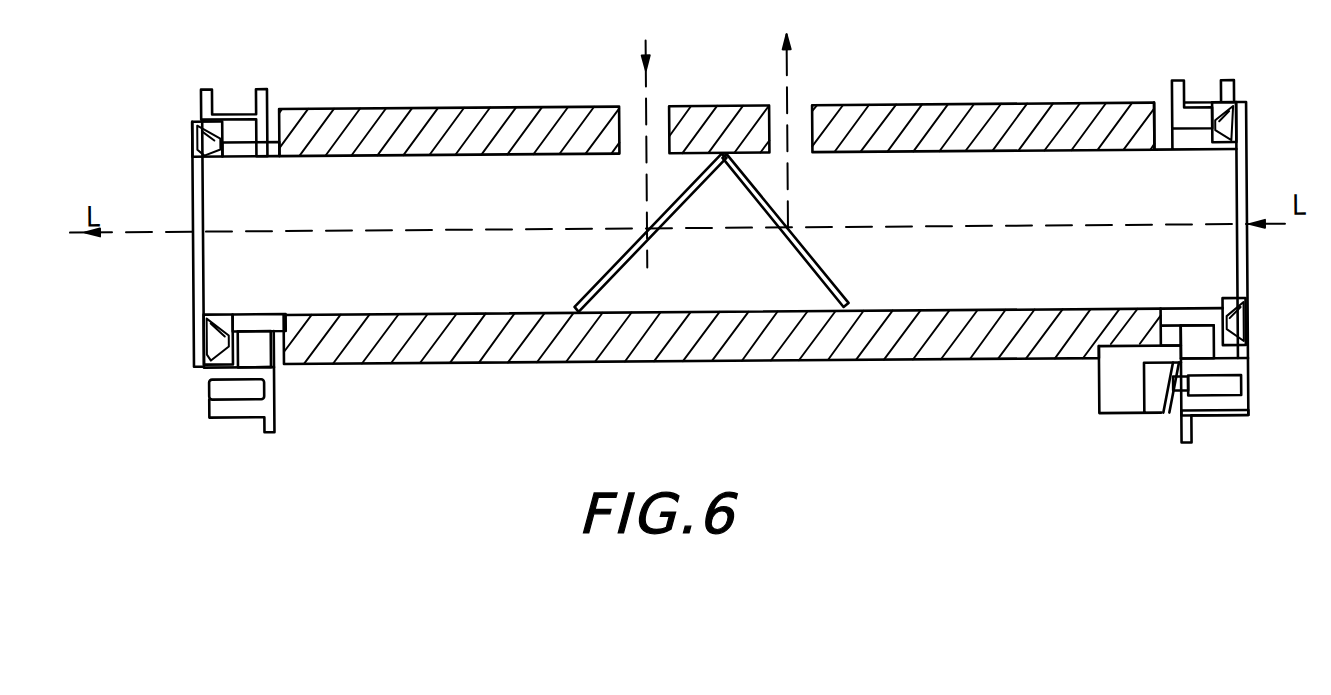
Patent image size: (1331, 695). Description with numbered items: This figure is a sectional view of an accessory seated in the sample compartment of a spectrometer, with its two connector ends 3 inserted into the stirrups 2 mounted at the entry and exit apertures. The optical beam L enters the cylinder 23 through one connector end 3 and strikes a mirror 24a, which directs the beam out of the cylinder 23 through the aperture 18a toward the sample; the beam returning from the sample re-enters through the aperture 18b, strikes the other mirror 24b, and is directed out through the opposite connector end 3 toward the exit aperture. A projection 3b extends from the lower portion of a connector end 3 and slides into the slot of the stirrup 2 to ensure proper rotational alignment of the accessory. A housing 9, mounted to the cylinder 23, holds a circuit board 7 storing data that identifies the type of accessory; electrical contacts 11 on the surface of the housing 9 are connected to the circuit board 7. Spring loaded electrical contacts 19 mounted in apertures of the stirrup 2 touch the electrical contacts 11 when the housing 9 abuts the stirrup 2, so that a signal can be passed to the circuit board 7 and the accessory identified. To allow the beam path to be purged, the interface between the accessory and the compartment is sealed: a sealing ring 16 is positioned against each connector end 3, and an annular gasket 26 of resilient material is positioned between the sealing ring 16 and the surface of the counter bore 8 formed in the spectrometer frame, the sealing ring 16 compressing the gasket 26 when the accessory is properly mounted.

The stirrup 2 is at (245, 126).
The connector end 3 is at (270, 142).
The projection 3b is at (253, 348).
The circuit board 7 is at (1148, 417).
The counter bore 8 is at (195, 198).
The housing 9 is at (1113, 387).
The electrical contacts 11 is at (1162, 404).
The sealing ring 16 is at (202, 143).
The aperture 18a is at (800, 108).
The aperture 18b is at (633, 108).
The spring loaded electrical contacts 19 is at (1247, 421).
The cylinder 23 is at (400, 117).
The mirror 24a is at (790, 242).
The mirror 24b is at (640, 247).
The annular gasket 26 is at (201, 124).